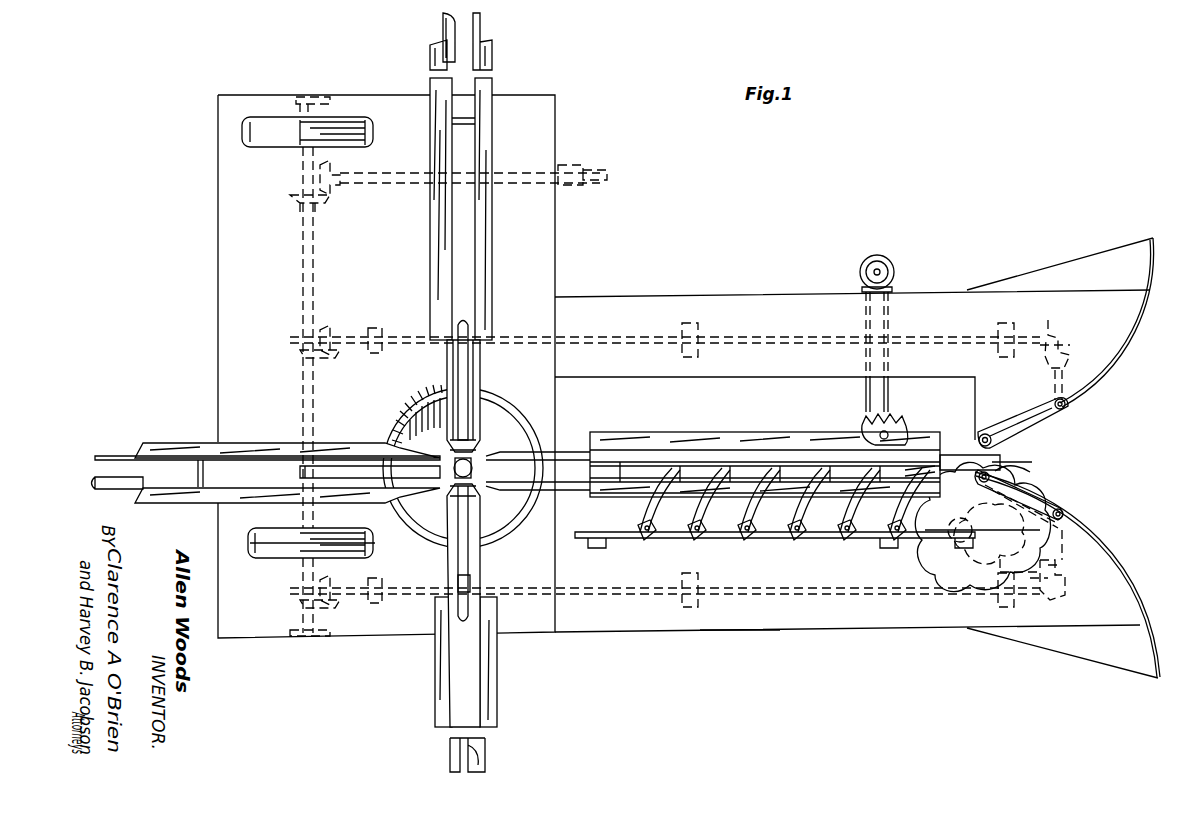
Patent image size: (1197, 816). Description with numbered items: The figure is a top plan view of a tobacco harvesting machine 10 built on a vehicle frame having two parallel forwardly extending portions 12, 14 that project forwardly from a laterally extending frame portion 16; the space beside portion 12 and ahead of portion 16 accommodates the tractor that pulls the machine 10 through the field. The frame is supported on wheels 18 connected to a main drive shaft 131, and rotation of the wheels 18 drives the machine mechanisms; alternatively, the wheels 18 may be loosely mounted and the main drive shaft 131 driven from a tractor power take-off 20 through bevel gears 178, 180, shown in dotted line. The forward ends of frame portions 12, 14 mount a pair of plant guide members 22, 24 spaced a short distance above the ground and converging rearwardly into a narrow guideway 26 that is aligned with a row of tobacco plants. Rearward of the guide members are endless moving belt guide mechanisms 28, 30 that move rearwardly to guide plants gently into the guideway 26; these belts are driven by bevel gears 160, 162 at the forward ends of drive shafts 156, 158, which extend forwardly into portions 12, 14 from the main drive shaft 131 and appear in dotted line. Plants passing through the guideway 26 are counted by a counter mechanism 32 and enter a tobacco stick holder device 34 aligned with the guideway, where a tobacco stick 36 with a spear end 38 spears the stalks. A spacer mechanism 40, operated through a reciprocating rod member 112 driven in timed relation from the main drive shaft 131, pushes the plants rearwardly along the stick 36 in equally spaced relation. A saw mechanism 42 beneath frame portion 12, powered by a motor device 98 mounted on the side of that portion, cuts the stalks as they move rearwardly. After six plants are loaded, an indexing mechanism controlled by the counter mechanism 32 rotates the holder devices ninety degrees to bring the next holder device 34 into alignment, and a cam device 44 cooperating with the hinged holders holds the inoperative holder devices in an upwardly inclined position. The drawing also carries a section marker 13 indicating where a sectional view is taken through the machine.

The tobacco harvesting machine 10 is at (727, 238).
The forwardly extending frame portion 12 is at (783, 290).
The section line 13 is at (483, 452).
The forwardly extending frame portion 14 is at (796, 620).
The laterally extending frame portion 16 is at (556, 252).
The wheels 18 is at (260, 135).
The power take-off 20 is at (592, 168).
The plant guide member 22 is at (1093, 388).
The plant guide member 24 is at (1113, 540).
The guideway 26 is at (1027, 468).
The endless moving belt guide mechanism 28 is at (1073, 420).
The endless moving belt guide mechanism 30 is at (1076, 502).
The counter mechanism 32 is at (1046, 487).
The tobacco stick holder device 34 is at (491, 122).
The tobacco stick 36 is at (760, 466).
The spear end 38 is at (917, 452).
The spacer mechanism 40 is at (824, 538).
The saw mechanism 42 is at (903, 409).
The cam device 44 is at (518, 390).
The motor device 98 is at (890, 260).
The reciprocating rod member 112 is at (718, 544).
The main drive shaft 131 is at (300, 260).
The drive shaft 156 is at (625, 598).
The drive shaft 158 is at (648, 328).
The bevel gear 160 is at (1068, 595).
The bevel gear 162 is at (1058, 318).
The bevel gear 178 is at (285, 205).
The bevel gear 180 is at (340, 195).